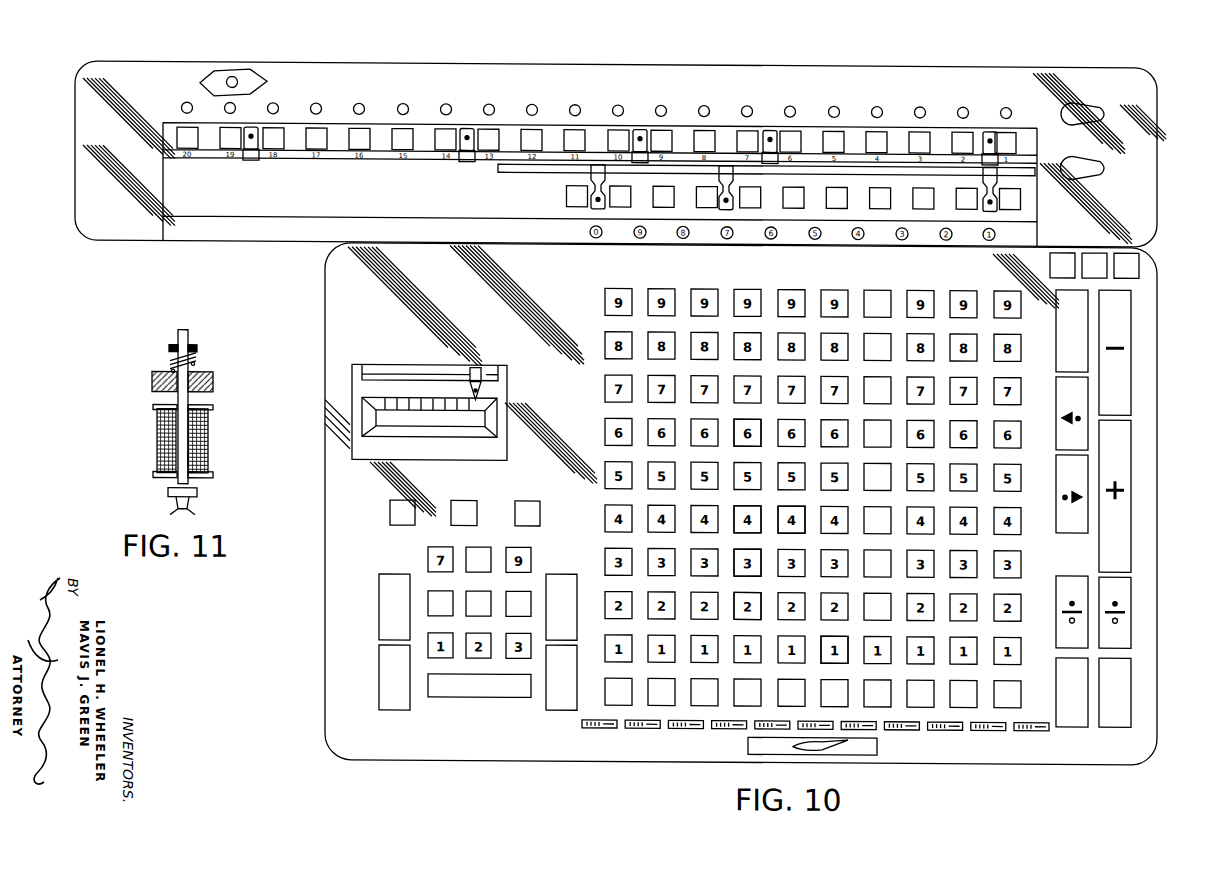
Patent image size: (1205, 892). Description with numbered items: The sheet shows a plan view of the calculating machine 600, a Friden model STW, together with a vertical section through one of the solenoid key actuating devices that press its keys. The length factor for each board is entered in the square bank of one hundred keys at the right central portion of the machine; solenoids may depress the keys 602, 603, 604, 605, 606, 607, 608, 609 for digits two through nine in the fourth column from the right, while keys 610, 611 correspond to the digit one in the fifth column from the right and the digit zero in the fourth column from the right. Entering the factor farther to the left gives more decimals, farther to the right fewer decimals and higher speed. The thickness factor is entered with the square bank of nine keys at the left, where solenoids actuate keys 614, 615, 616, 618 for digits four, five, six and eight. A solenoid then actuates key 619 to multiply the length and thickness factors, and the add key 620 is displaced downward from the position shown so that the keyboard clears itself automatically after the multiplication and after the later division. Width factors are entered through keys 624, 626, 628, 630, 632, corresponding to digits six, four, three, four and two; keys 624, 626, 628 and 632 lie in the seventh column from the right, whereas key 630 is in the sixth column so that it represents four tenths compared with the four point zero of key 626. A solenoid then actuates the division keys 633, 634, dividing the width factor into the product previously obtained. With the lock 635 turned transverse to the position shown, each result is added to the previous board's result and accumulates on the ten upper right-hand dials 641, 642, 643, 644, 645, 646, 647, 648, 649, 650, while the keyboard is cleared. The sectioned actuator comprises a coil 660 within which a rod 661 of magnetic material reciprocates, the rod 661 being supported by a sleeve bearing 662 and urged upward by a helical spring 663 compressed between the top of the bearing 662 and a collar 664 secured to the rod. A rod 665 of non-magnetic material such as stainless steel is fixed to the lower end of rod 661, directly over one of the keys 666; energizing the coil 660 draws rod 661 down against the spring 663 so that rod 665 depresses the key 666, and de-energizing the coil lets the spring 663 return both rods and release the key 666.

In FIG. 10, the calculating machine 600 is at (1085, 756).
In FIG. 10, the key 602 is at (880, 591).
In FIG. 10, the key 603 is at (880, 548).
In FIG. 10, the key 604 is at (880, 504).
In FIG. 10, the key 605 is at (880, 461).
In FIG. 10, the key 606 is at (880, 418).
In FIG. 10, the key 607 is at (880, 374).
In FIG. 10, the key 608 is at (880, 331).
In FIG. 10, the key 609 is at (876, 285).
In FIG. 10, the key 610 is at (830, 637).
In FIG. 10, the key 611 is at (876, 680).
In FIG. 10, the key 614 is at (437, 596).
In FIG. 10, the key 615 is at (477, 596).
In FIG. 10, the key 616 is at (515, 596).
In FIG. 10, the key 618 is at (475, 548).
In FIG. 10, the key 619 is at (568, 669).
In FIG. 10, the add key 620 is at (1132, 253).
In FIG. 10, the key 624 is at (749, 421).
In FIG. 10, the key 626 is at (747, 507).
In FIG. 10, the key 628 is at (746, 553).
In FIG. 10, the key 630 is at (797, 507).
In FIG. 10, the key 632 is at (748, 594).
In FIG. 10, the division key 633 is at (1125, 586).
In FIG. 10, the division key 634 is at (1076, 574).
In FIG. 10, the lock 635 is at (1083, 104).
In FIG. 10, the dial 641 is at (1010, 126).
In FIG. 10, the dial 642 is at (967, 126).
In FIG. 10, the dial 643 is at (924, 126).
In FIG. 10, the dial 644 is at (881, 126).
In FIG. 10, the dial 645 is at (838, 126).
In FIG. 10, the dial 646 is at (794, 126).
In FIG. 10, the dial 647 is at (751, 126).
In FIG. 10, the dial 648 is at (708, 126).
In FIG. 10, the dial 649 is at (665, 126).
In FIG. 10, the dial 650 is at (622, 126).
In FIG. 11, the coil 660 is at (205, 441).
In FIG. 11, the rod 661 is at (188, 400).
In FIG. 11, the sleeve bearing 662 is at (212, 383).
In FIG. 11, the helical spring 663 is at (195, 358).
In FIG. 11, the collar 664 is at (190, 346).
In FIG. 11, the rod 665 is at (197, 459).
In FIG. 11, the key 666 is at (194, 497).